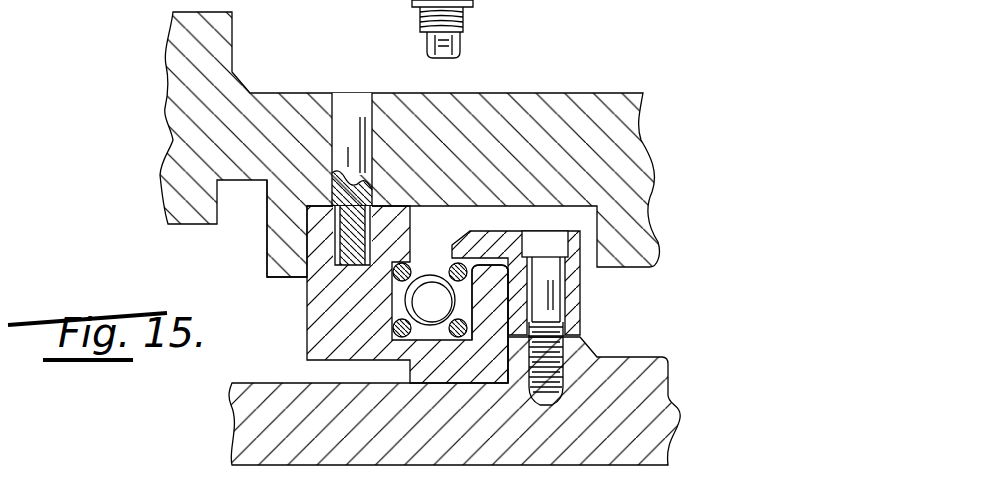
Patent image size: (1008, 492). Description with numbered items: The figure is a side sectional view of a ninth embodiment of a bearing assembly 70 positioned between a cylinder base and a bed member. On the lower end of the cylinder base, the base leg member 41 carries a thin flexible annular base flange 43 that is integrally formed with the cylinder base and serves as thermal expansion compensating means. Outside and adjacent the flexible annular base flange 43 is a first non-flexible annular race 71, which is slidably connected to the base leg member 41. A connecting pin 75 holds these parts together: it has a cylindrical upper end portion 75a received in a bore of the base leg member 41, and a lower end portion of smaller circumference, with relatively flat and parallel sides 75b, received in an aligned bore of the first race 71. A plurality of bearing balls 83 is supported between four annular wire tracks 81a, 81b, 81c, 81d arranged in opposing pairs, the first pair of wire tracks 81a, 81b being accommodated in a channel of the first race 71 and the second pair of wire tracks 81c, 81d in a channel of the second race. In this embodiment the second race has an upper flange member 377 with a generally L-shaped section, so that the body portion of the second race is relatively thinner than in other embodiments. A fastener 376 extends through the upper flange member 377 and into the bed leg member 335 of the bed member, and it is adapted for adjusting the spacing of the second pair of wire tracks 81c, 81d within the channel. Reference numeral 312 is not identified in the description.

The base leg member 41 is at (565, 98).
The flexible annular base flange 43 is at (282, 232).
The bearing assembly 70 is at (434, 360).
The first non-flexible annular race 71 is at (306, 328).
The connecting pin 75 is at (349, 92).
The cylindrical upper end portion 75a is at (380, 118).
The relatively flat and parallel sides 75b is at (332, 230).
The annular wire track 81a is at (393, 330).
The annular wire track 81b is at (410, 263).
The annular wire track 81c is at (452, 264).
The annular wire track 81d is at (463, 340).
The bearing ball 83 is at (432, 342).
The guide wall 312 is at (495, 298).
The bed leg member 335 is at (657, 372).
The fastener 376 is at (555, 243).
The upper flange member 377 is at (503, 237).